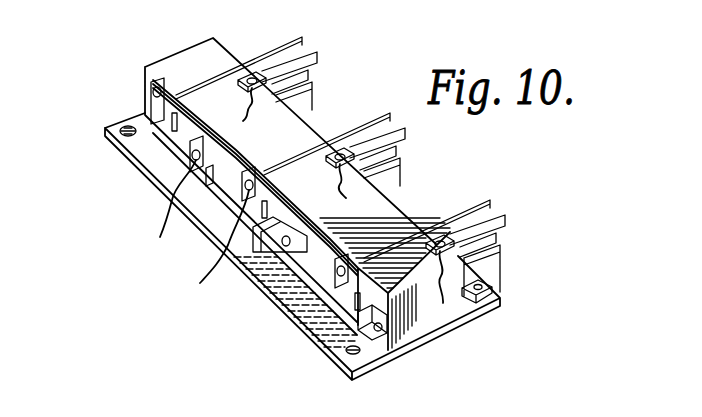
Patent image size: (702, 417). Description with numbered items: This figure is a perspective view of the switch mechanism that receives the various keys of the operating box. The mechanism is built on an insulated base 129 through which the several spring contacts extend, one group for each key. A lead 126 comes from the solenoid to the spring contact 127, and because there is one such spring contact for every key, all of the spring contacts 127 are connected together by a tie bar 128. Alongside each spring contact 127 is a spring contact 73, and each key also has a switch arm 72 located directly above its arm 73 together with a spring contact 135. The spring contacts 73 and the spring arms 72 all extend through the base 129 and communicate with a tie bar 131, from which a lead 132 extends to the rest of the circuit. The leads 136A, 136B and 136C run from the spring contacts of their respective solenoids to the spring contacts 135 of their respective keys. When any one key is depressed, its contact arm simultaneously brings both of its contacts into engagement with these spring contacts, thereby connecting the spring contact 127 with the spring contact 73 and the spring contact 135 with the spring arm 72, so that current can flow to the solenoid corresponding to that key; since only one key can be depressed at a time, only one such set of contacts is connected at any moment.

The switch arm 72 is at (301, 38).
The spring contact 135 is at (317, 52).
The spring contact 73 is at (309, 72).
The spring contact 127 is at (312, 108).
The lead 136A is at (443, 303).
The lead 136B is at (360, 181).
The lead 136C is at (263, 109).
The lead 126 is at (168, 213).
The lead 132 is at (214, 251).
The tie bar 128 is at (292, 255).
The tie bar 131 is at (328, 258).
The insulated base 129 is at (420, 334).